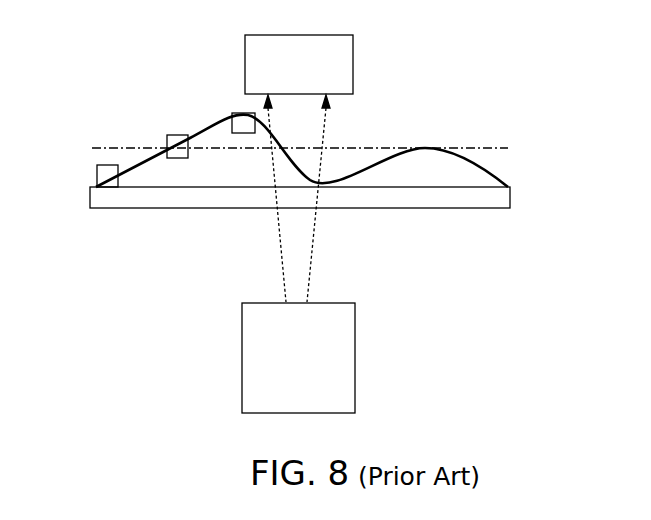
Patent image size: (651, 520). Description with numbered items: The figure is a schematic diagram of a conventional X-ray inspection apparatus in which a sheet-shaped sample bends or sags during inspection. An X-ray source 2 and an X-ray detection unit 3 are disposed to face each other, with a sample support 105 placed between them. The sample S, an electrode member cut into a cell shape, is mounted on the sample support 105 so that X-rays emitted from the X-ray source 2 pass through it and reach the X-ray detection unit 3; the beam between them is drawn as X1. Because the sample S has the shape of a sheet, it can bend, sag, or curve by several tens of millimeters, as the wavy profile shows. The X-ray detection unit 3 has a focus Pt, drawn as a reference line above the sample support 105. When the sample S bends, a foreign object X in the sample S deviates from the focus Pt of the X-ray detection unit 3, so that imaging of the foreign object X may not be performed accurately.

The sample support 105 is at (482, 210).
The focus Pt is at (483, 148).
The sample S is at (481, 175).
The foreign object X is at (107, 165).
The X-ray detection unit 3 is at (353, 60).
The measurement light beam X1 is at (313, 243).
The X-ray source 2 is at (355, 355).